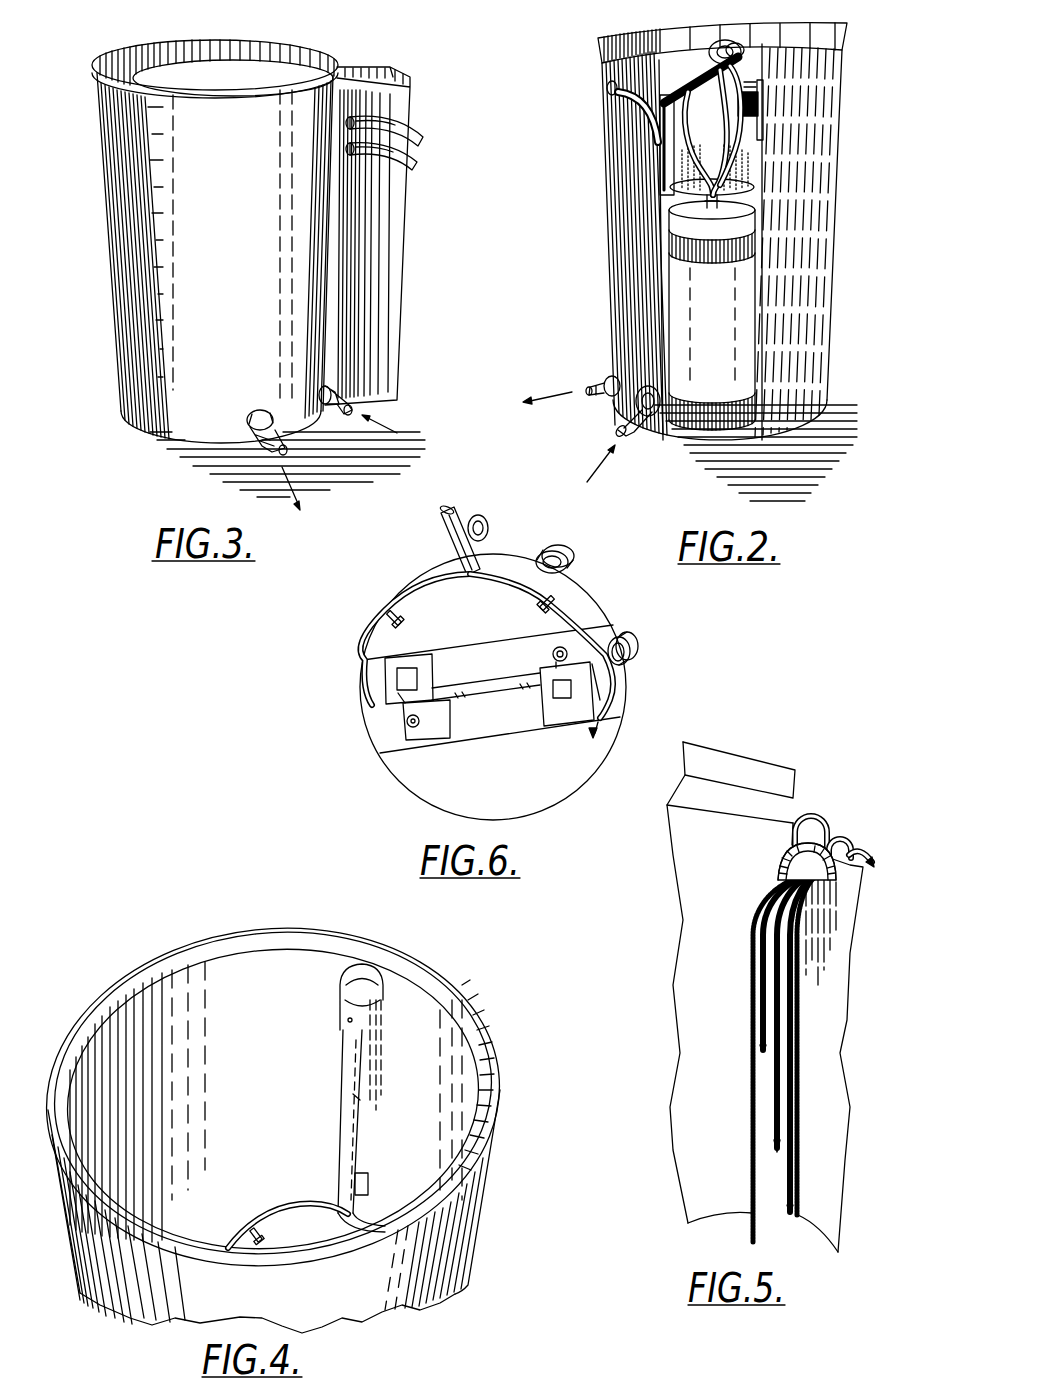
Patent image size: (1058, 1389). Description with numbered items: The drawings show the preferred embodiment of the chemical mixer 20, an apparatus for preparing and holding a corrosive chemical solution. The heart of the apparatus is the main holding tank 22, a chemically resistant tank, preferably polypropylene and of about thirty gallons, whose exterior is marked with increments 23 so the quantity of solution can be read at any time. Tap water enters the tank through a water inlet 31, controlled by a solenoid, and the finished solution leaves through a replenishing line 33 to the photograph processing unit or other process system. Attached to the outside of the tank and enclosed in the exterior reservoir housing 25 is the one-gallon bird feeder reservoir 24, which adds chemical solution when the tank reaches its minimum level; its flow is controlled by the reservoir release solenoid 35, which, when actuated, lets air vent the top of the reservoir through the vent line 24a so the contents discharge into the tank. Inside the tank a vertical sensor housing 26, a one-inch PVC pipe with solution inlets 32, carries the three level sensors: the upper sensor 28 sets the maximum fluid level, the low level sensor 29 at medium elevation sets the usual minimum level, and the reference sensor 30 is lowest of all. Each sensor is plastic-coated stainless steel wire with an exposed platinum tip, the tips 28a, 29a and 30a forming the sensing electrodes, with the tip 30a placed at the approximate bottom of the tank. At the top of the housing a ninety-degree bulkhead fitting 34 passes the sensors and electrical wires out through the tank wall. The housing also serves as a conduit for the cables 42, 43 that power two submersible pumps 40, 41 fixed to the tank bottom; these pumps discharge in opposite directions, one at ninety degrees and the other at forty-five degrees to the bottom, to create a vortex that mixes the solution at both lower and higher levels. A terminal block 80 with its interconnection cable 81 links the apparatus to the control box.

In FIG. 3, the chemical mixer 20 is at (273, 33).
In FIG. 2, the chemical mixer 20 is at (677, 23).
In FIG. 4, the chemical mixer 20 is at (222, 930).
In FIG. 3, the main holding tank 22 is at (235, 215).
In FIG. 2, the main holding tank 22 is at (608, 237).
In FIG. 6, the main holding tank 22 is at (510, 787).
In FIG. 5, the main holding tank 22 is at (731, 862).
In FIG. 4, the main holding tank 22 is at (251, 1160).
In FIG. 3, the increments 23 is at (128, 280).
In FIG. 2, the bird feeder reservoir 24 is at (728, 330).
In FIG. 2, the vent line 24a is at (749, 176).
In FIG. 3, the exterior reservoir housing 25 is at (395, 335).
In FIG. 2, the exterior reservoir housing 25 is at (763, 402).
In FIG. 6, the sensor housing 26 is at (440, 540).
In FIG. 5, the sensor housing 26 is at (798, 1117).
In FIG. 4, the sensor housing 26 is at (347, 1047).
In FIG. 2, the upper sensor 28 is at (732, 150).
In FIG. 5, the upper sensor 28 is at (808, 798).
In FIG. 5, the tip portion of upper sensor 28a is at (758, 1065).
In FIG. 2, the low level sensor 29 is at (727, 140).
In FIG. 5, the low level sensor 29 is at (842, 823).
In FIG. 5, the tip portion of low level sensor 29a is at (770, 1160).
In FIG. 2, the reference sensor 30 is at (745, 68).
In FIG. 5, the reference sensor 30 is at (860, 842).
In FIG. 5, the tip portion of reference sensor 30a is at (800, 1212).
In FIG. 3, the water inlet 31 is at (353, 390).
In FIG. 2, the water inlet 31 is at (648, 427).
In FIG. 6, the water inlet 31 is at (570, 558).
In FIG. 4, the solution inlets 32 is at (358, 1097).
In FIG. 3, the replenishing line 33 is at (284, 460).
In FIG. 2, the replenishing line 33 is at (600, 378).
In FIG. 6, the replenishing line 33 is at (628, 635).
In FIG. 4, the ninety-degree bulkhead fitting 34 is at (343, 990).
In FIG. 2, the reservoir release solenoid 35 is at (745, 80).
In FIG. 6, the submersible pump 40 is at (440, 737).
In FIG. 6, the submersible pump 41 is at (555, 712).
In FIG. 6, the cable 42 is at (422, 598).
In FIG. 6, the cable 43 is at (513, 592).
In FIG. 2, the terminal block 80 is at (600, 75).
In FIG. 3, the interconnection cable 81 is at (418, 128).
In FIG. 2, the interconnection cable 81 is at (602, 93).